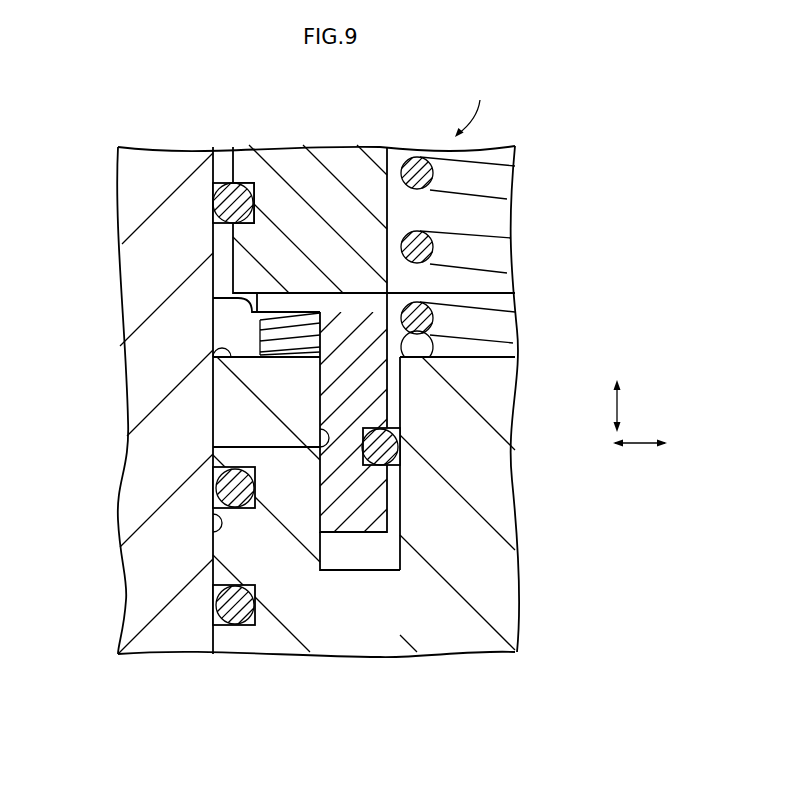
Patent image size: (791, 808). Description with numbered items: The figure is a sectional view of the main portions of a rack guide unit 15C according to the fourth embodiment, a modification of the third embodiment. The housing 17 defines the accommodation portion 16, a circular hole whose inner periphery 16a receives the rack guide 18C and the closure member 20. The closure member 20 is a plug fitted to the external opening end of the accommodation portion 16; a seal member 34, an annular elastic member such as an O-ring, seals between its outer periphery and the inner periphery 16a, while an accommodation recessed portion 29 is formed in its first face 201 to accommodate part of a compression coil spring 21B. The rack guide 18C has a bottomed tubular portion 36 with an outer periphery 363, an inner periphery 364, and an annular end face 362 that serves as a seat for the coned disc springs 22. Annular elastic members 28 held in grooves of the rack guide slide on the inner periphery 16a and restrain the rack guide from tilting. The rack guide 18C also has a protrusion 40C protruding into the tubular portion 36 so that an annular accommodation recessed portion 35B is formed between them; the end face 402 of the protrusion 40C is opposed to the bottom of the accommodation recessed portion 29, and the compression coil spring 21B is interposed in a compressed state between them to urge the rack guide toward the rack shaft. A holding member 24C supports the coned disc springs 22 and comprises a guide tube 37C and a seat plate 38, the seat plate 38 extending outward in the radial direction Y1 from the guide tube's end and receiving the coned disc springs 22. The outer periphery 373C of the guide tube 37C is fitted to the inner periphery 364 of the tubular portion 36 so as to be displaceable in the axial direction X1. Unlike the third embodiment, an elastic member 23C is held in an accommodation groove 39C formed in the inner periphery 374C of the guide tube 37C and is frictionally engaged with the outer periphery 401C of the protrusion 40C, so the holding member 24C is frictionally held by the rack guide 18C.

The rack guide unit 15C is at (477, 106).
The accommodation portion 16 is at (225, 157).
The inner periphery of the accommodation portion 16a is at (213, 520).
The housing 17 is at (135, 218).
The rack guide 18C is at (205, 547).
The closure member 20 is at (322, 178).
The first face of the closure member 201 is at (213, 298).
The compression coil spring 21B is at (410, 158).
The coned disc spring 22 is at (260, 325).
The elastic member 23C is at (382, 440).
The holding member 24C is at (390, 388).
The annular elastic member 28 is at (233, 484).
The accommodation recessed portion 29 is at (490, 216).
The seal member 34 is at (213, 195).
The annular accommodation recessed portion 35B is at (380, 562).
The tubular portion 36 is at (233, 415).
The end face of the tubular portion 362 is at (214, 352).
The outer periphery of the tubular portion 363 is at (213, 432).
The inner periphery of the tubular portion 364 is at (322, 446).
The guide tube 37C is at (380, 492).
The outer periphery of the guide tube 373C is at (320, 396).
The inner periphery of the guide tube 374C is at (400, 402).
The seat plate 38 is at (270, 300).
The accommodation groove 39C is at (400, 463).
The protrusion 40C is at (500, 495).
The outer periphery of the protrusion 401C is at (390, 517).
The end face of the protrusion 402 is at (481, 355).
The axial direction X1 is at (620, 405).
The radial direction Y1 is at (642, 446).